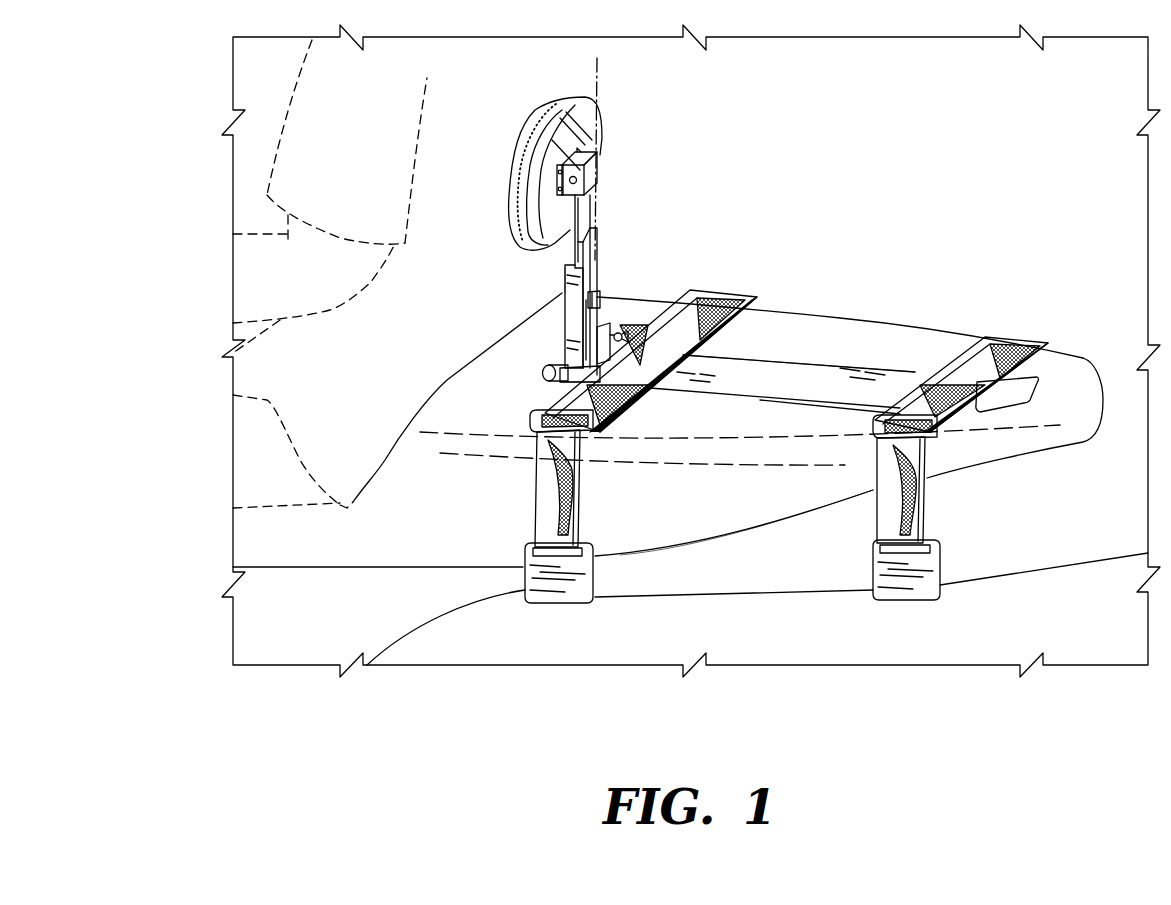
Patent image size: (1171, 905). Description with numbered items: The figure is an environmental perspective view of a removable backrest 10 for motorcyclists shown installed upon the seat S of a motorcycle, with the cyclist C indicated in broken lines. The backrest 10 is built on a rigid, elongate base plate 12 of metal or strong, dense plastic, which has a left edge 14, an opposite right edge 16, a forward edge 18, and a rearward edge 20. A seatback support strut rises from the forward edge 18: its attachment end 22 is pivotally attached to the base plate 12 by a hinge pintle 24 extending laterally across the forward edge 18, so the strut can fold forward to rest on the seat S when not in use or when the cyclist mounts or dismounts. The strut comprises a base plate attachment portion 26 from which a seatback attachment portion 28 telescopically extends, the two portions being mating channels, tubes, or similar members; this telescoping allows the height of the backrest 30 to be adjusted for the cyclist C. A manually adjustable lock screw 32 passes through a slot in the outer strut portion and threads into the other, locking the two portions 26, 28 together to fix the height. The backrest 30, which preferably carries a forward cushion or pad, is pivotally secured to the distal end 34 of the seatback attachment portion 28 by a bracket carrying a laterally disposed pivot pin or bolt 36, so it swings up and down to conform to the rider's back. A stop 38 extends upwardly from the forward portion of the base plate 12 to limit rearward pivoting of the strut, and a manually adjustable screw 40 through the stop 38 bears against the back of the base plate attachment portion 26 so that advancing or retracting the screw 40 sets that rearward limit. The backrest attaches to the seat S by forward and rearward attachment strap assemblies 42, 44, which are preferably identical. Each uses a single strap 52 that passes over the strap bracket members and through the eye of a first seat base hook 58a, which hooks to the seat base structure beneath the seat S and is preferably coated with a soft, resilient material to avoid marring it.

The backrest 10 is at (977, 148).
The base plate 12 is at (808, 389).
The left edge 14 is at (788, 400).
The right edge 16 is at (855, 365).
The forward edge 18 is at (573, 378).
The rearward edge 20 is at (1030, 407).
The attachment end 22 is at (565, 366).
The hinge pintle 24 is at (542, 377).
The base plate attachment portion 26 is at (565, 286).
The seatback attachment portion 28 is at (590, 208).
The backrest 30 is at (543, 112).
The lock screw 32 is at (600, 298).
The distal end 34 is at (592, 190).
The pivot pin or bolt 36 is at (558, 190).
The stop 38 is at (627, 335).
The adjustable screw 40 is at (630, 322).
The forward attachment strap assembly 42 is at (758, 268).
The rearward attachment strap assembly 44 is at (1048, 316).
The strap 52 is at (583, 497).
The first seat base hook 58a is at (525, 602).
The cyclist C is at (597, 60).
The seat S is at (678, 556).